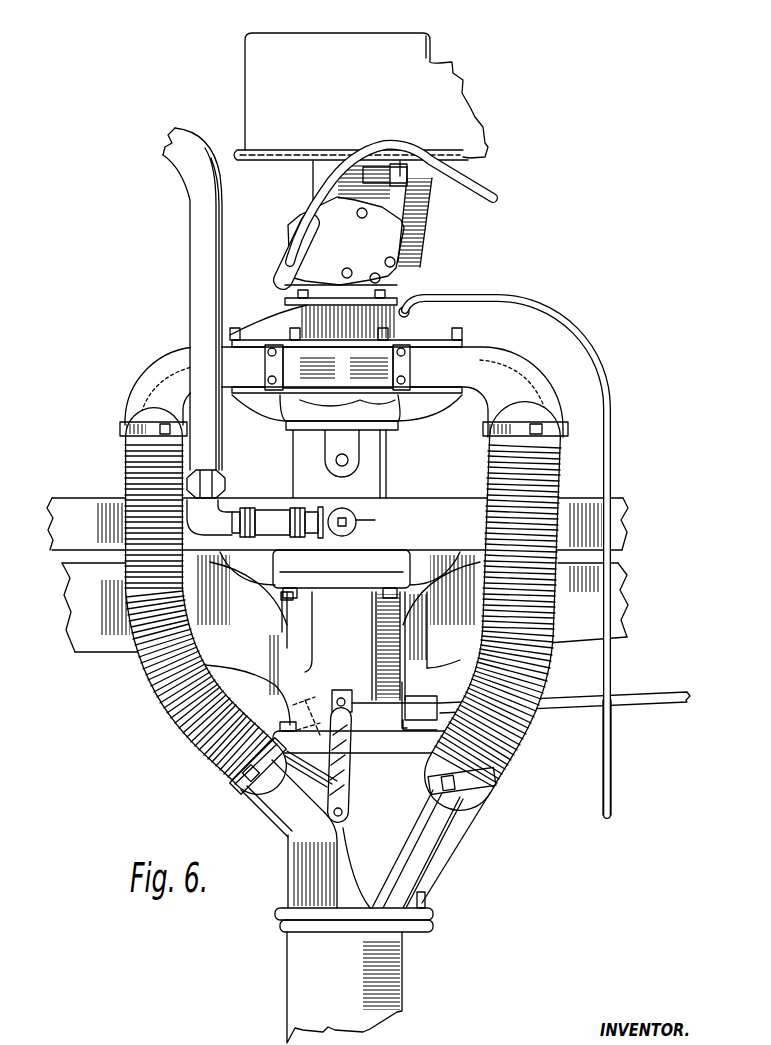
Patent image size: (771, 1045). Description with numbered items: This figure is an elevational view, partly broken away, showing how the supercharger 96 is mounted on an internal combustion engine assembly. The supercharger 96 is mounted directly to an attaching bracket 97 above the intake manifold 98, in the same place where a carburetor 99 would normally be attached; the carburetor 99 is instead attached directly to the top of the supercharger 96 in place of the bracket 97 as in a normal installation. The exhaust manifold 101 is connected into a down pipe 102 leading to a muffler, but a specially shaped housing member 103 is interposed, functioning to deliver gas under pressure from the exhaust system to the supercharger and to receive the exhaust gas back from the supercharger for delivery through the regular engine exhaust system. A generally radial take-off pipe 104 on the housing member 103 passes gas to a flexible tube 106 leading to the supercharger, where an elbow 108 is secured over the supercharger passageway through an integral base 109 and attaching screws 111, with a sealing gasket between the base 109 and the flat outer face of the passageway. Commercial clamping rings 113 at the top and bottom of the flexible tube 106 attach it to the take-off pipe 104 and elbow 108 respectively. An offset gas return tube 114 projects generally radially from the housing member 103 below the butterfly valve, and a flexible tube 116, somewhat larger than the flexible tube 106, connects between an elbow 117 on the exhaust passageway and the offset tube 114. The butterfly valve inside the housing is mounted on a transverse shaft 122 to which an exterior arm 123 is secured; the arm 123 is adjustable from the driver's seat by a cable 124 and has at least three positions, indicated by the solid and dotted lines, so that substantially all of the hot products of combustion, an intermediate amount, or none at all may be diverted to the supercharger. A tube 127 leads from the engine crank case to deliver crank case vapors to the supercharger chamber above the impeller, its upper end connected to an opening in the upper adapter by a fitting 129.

The supercharger 96 is at (432, 319).
The attaching bracket 97 is at (389, 460).
The intake manifold 98 is at (600, 474).
The carburetor 99 is at (420, 250).
The exhaust manifold 101 is at (586, 646).
The down pipe 102 is at (405, 967).
The housing member 103 is at (288, 872).
The take-off pipe 104 is at (277, 820).
The flexible tube 106 is at (213, 763).
The elbow 108 is at (172, 360).
The integral base 109 is at (246, 388).
The attaching screws 111 is at (268, 338).
The clamping rings 113 is at (130, 425).
The offset gas return tube 114 is at (454, 833).
The flexible tube 116 is at (522, 733).
The elbow 117 is at (540, 377).
The transverse shaft 122 is at (344, 813).
The exterior arm 123 is at (355, 775).
The cable 124 is at (390, 703).
The tube 127 is at (606, 772).
The fitting 129 is at (405, 309).